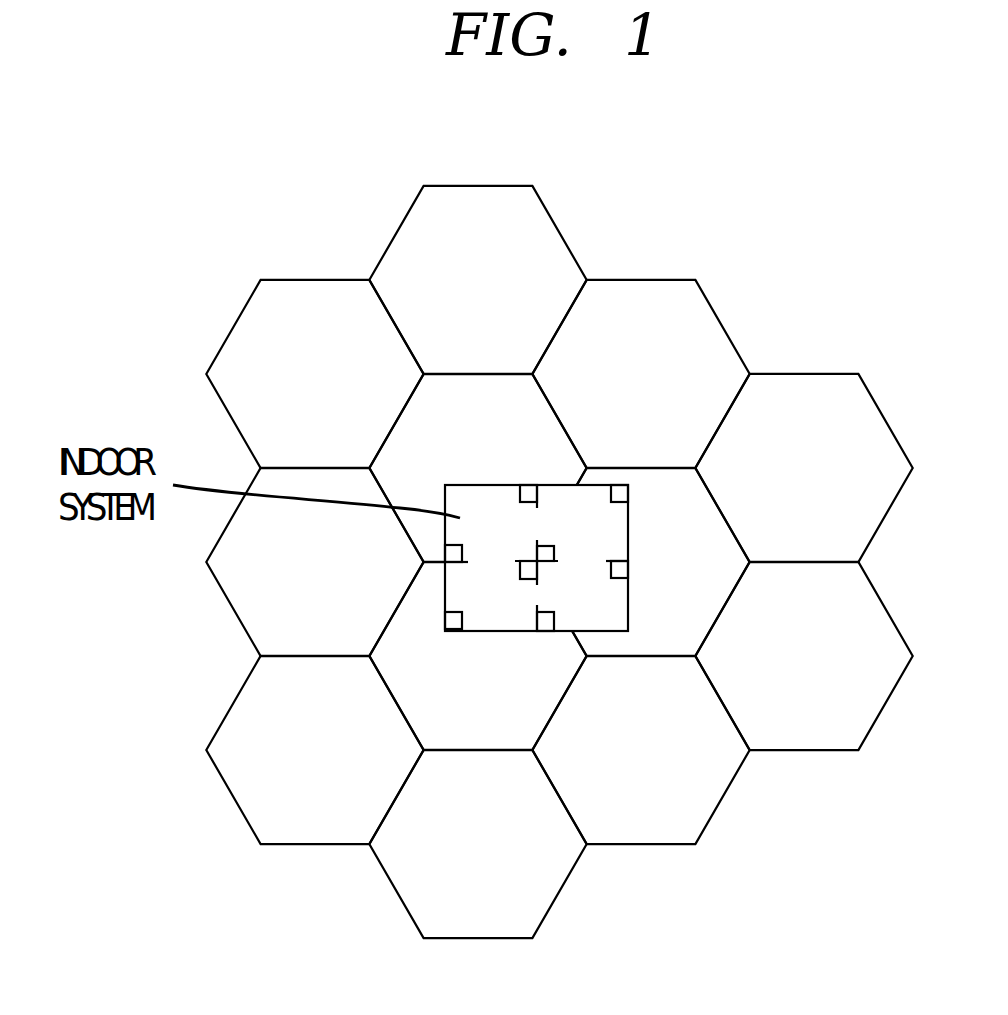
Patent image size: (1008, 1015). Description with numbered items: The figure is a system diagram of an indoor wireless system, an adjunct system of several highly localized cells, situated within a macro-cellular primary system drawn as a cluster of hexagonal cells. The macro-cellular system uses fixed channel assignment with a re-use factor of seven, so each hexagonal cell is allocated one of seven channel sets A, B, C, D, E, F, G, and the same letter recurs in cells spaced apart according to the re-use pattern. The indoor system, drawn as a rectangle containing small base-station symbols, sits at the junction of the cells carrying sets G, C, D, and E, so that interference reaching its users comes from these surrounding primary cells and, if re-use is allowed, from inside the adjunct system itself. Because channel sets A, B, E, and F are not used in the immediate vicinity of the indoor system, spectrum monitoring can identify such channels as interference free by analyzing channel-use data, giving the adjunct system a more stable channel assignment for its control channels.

The channel set A is at (559, 515).
The channel set B is at (559, 609).
The channel set C is at (640, 562).
The channel set D is at (477, 656).
The channel set E is at (559, 515).
The channel set F is at (477, 562).
The channel set G is at (477, 468).